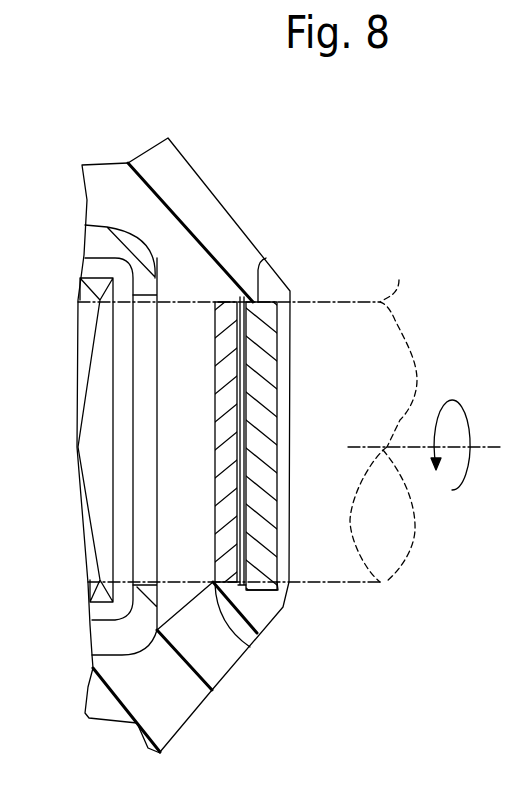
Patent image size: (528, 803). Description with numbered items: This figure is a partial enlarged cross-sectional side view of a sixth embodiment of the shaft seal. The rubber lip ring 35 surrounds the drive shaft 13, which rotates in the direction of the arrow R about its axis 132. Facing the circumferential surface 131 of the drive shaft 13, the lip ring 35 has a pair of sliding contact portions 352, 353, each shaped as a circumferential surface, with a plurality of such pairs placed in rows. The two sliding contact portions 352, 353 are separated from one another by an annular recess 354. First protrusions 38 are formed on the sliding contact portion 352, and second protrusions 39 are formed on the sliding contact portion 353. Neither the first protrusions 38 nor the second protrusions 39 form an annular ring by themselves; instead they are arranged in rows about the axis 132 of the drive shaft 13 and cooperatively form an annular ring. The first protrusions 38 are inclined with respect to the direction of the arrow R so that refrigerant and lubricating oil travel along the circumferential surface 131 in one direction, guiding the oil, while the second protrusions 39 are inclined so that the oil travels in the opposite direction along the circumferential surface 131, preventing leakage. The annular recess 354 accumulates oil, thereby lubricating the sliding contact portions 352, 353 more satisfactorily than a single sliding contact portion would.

The lip ring 35 is at (250, 183).
The annular recess 354 is at (262, 262).
The sliding contact portion 352 is at (275, 617).
The sliding contact portion 353 is at (250, 648).
The first protrusion 38 is at (278, 372).
The second protrusion 39 is at (222, 430).
The drive shaft 13 is at (399, 280).
The axis of the drive shaft 132 is at (355, 447).
The circumferential surface of the drive shaft 131 is at (340, 584).
The arrow R is at (455, 400).